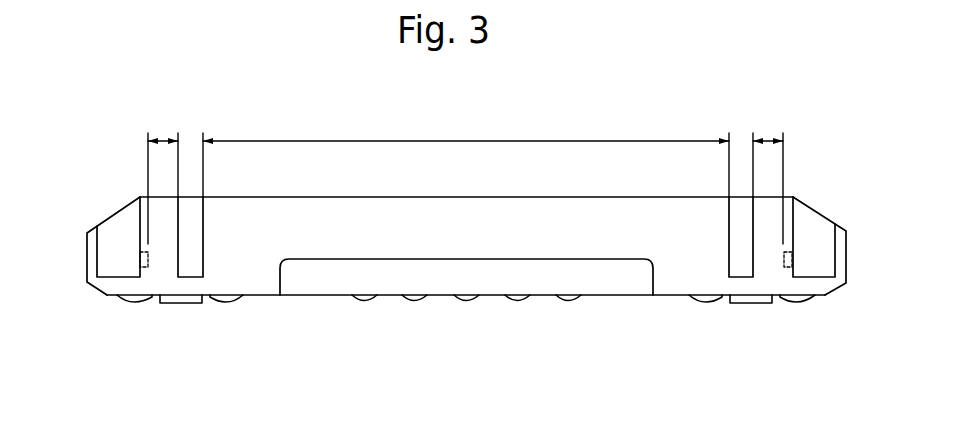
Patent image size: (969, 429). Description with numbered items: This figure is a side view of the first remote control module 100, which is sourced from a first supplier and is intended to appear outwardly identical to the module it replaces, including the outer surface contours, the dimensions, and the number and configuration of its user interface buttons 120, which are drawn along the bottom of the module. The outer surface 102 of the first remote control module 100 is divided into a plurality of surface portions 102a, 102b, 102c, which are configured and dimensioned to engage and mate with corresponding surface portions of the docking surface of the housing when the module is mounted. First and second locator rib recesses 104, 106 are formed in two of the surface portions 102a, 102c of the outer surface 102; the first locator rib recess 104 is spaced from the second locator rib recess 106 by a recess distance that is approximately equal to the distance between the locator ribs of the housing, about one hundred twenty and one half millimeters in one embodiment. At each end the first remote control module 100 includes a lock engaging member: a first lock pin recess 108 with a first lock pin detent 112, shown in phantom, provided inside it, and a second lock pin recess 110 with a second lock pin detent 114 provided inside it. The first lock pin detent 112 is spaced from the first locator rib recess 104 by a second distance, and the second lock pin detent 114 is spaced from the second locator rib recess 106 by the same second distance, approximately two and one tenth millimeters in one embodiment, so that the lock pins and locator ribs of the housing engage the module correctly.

The first remote control module 100 is at (266, 121).
The outer surface 102 is at (259, 298).
The surface portion 102a is at (342, 196).
The surface portion 102b is at (89, 232).
The surface portion 102c is at (84, 259).
The first locator rib recess 104 is at (200, 235).
The second locator rib recess 106 is at (732, 235).
The first lock pin recess 108 is at (120, 226).
The second lock pin recess 110 is at (813, 226).
The first lock pin detent 112 is at (148, 267).
The second lock pin detent 114 is at (784, 267).
The user interface buttons 120 is at (133, 304).